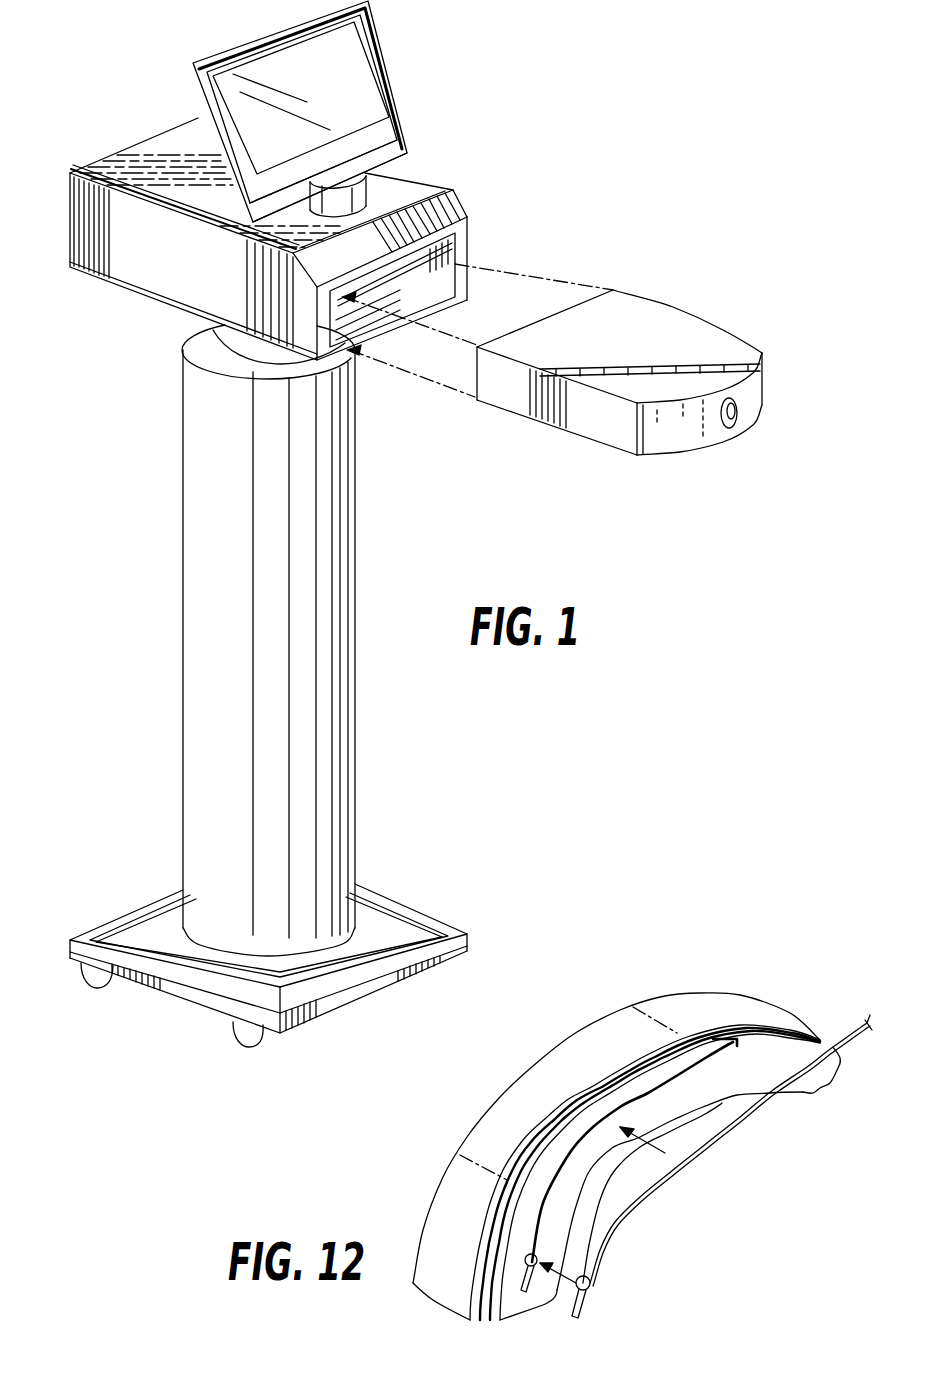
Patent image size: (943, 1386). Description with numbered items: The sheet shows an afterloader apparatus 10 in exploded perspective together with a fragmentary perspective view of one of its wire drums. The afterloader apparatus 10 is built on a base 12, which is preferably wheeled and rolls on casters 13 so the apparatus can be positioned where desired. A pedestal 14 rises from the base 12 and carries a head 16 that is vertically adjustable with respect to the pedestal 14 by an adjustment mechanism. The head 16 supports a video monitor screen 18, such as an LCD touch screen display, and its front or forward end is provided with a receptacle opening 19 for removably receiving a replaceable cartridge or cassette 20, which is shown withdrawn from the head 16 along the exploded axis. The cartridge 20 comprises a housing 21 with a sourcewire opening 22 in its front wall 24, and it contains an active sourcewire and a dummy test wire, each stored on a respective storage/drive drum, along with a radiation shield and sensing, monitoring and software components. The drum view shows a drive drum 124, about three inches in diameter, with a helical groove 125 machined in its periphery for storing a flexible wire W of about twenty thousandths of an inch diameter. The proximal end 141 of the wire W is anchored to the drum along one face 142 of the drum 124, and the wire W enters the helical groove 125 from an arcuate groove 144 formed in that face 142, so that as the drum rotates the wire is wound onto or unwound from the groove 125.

In FIG. 1, the afterloader apparatus 10 is at (553, 142).
In FIG. 1, the base 12 is at (403, 917).
In FIG. 1, the casters 13 is at (93, 973).
In FIG. 1, the pedestal 14 is at (333, 695).
In FIG. 1, the head 16 is at (138, 282).
In FIG. 1, the video monitor screen 18 is at (398, 133).
In FIG. 1, the receptacle opening 19 is at (455, 262).
In FIG. 1, the cartridge 20 is at (683, 297).
In FIG. 1, the housing 21 is at (733, 336).
In FIG. 1, the sourcewire opening 22 is at (734, 426).
In FIG. 1, the front wall 24 is at (666, 442).
In FIG. 12, the drive drum 124 is at (658, 997).
In FIG. 12, the helical groove 125 is at (550, 1137).
In FIG. 12, the proximal end 141 is at (596, 1294).
In FIG. 12, the face 142 is at (513, 1307).
In FIG. 12, the arcuate groove 144 is at (686, 1072).
In FIG. 12, the flexible wire W is at (630, 1216).